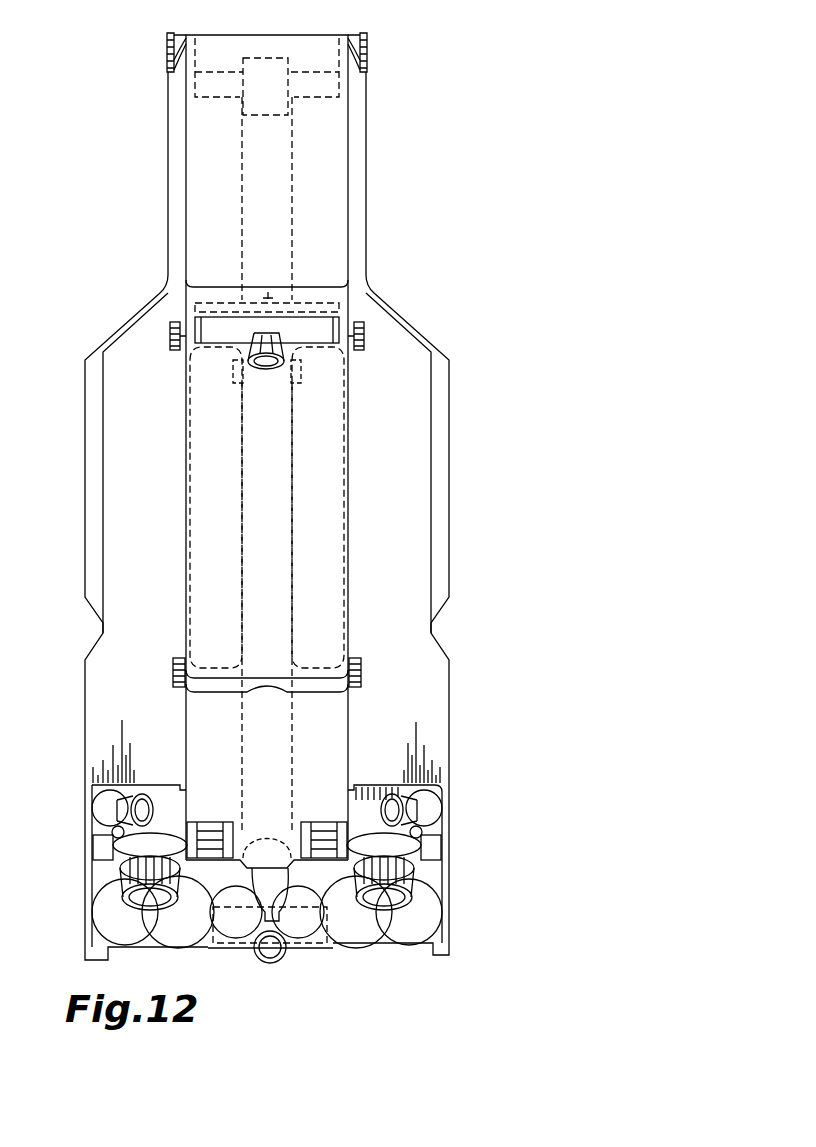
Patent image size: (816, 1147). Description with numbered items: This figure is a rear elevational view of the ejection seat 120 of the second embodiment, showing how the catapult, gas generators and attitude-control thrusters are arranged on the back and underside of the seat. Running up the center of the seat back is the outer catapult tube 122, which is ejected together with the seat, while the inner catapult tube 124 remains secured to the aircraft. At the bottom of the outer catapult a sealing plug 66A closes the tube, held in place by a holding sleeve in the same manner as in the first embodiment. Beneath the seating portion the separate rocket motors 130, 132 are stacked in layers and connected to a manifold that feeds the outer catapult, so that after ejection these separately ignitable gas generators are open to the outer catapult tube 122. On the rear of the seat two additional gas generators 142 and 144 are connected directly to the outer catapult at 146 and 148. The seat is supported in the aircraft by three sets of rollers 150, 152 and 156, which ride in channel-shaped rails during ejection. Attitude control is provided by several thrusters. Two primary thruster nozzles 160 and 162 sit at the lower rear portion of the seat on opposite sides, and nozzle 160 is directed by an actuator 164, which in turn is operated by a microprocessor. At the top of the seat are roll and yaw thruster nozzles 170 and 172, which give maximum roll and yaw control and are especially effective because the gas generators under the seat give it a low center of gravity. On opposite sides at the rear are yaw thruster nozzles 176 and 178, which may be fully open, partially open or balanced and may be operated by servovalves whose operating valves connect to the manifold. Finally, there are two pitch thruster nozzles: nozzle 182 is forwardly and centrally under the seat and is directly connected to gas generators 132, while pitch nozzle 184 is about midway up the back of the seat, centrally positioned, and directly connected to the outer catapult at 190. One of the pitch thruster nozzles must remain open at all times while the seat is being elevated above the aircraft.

The sealing plug 66A is at (279, 62).
The seat 120 is at (458, 375).
The outer catapult tube 122 is at (293, 475).
The inner catapult tube 124 is at (292, 922).
The rocket motor 130 is at (176, 948).
The rocket motor 132 is at (245, 945).
The gas generator 142 is at (216, 507).
The gas generator 144 is at (318, 507).
The connection to outer catapult 146 is at (234, 384).
The connection to outer catapult 148 is at (296, 384).
The rollers 150 is at (170, 336).
The rollers 152 is at (173, 670).
The rollers 156 is at (184, 786).
The primary thruster nozzle 160 is at (158, 934).
The primary thruster nozzle 162 is at (400, 905).
The actuator 164 is at (110, 848).
The roll and yaw thruster nozzle 170 is at (172, 57).
The roll and yaw thruster nozzle 172 is at (368, 52).
The yaw thruster nozzle 176 is at (100, 803).
The yaw thruster nozzle 178 is at (412, 808).
The pitch thruster nozzle 182 is at (275, 964).
The pitch thruster nozzle 184 is at (272, 336).
The connection to outer catapult 190 is at (268, 294).